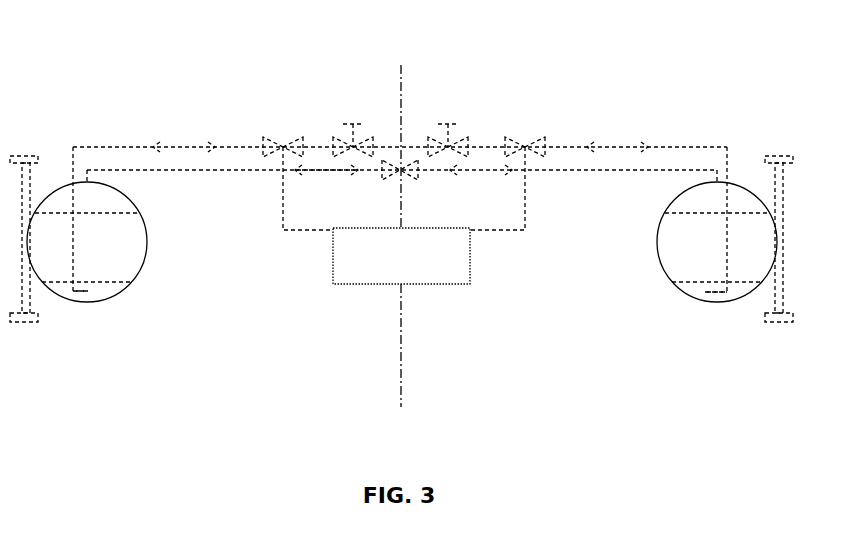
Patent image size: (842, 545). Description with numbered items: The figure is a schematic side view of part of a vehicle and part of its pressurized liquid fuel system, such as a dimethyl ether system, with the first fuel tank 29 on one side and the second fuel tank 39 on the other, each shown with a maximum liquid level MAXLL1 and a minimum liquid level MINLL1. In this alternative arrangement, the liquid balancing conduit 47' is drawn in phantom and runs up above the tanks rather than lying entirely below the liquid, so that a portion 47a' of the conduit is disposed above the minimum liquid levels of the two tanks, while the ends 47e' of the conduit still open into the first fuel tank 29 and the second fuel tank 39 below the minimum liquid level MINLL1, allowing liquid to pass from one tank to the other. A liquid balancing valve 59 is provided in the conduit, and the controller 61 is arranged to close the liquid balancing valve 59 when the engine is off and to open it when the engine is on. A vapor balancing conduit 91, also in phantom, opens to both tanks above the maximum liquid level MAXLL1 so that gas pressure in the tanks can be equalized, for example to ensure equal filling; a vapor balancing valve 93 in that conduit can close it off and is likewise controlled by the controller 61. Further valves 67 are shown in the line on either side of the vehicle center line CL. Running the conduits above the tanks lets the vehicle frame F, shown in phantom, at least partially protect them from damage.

The first fuel tank 29 is at (99, 261).
The second fuel tank 39 is at (694, 261).
The liquid balancing conduit 47' is at (400, 131).
The portion of the liquid balancing conduit 47a' is at (743, 203).
The ends of the conduit 47e' is at (400, 313).
The liquid balancing valve 59 is at (283, 140).
The controller 61 is at (394, 273).
The actuated valve 67 is at (343, 124).
The vapor balancing conduit 91 is at (324, 176).
The vapor balancing valve 93 is at (404, 173).
The center line CL is at (402, 98).
The frame F is at (401, 239).
The maximum liquid level MAXLL1 is at (137, 213).
The minimum liquid level MINLL1 is at (133, 283).